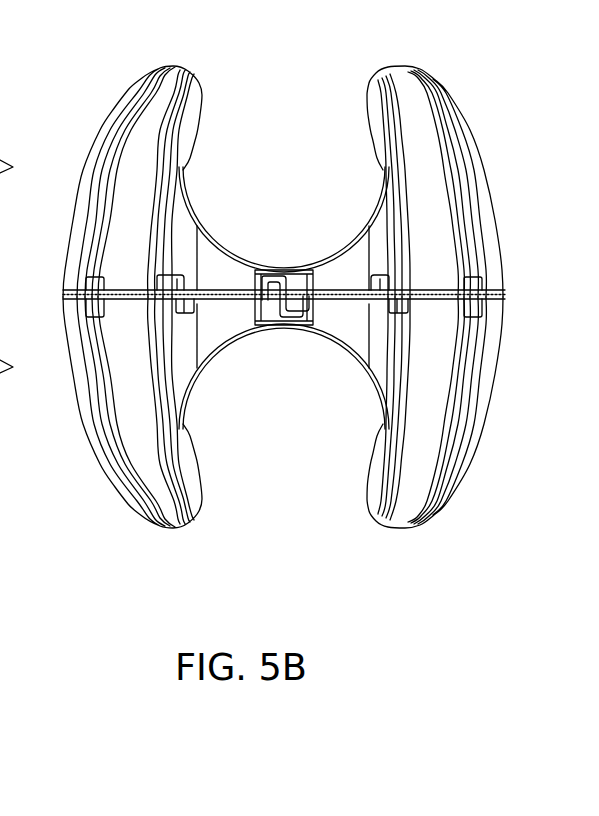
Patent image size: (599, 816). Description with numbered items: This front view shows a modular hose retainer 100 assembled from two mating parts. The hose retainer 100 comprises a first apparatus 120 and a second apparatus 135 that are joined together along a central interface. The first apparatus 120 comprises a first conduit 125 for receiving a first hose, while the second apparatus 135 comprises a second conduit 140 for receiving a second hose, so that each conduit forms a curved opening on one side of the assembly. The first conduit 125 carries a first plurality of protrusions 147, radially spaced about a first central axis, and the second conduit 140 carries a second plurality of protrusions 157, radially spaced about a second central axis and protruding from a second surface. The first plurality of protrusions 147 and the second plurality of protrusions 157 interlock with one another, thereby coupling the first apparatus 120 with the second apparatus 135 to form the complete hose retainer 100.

The hose retainer 100 is at (104, 12).
The first apparatus 120 is at (452, 516).
The second apparatus 135 is at (470, 87).
The second conduit 140 is at (302, 174).
The first conduit 125 is at (302, 425).
The first plurality of protrusions 147 is at (390, 288).
The second plurality of protrusions 157 is at (180, 300).